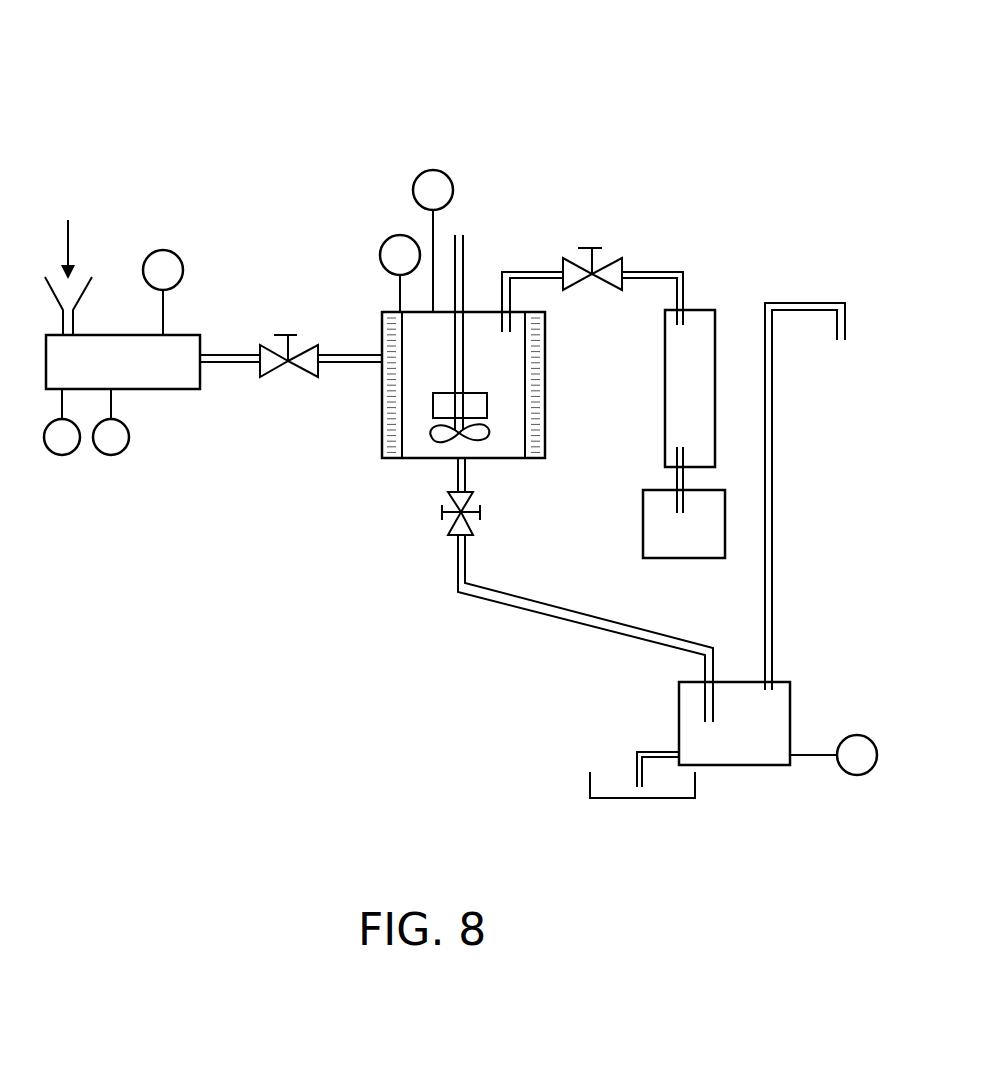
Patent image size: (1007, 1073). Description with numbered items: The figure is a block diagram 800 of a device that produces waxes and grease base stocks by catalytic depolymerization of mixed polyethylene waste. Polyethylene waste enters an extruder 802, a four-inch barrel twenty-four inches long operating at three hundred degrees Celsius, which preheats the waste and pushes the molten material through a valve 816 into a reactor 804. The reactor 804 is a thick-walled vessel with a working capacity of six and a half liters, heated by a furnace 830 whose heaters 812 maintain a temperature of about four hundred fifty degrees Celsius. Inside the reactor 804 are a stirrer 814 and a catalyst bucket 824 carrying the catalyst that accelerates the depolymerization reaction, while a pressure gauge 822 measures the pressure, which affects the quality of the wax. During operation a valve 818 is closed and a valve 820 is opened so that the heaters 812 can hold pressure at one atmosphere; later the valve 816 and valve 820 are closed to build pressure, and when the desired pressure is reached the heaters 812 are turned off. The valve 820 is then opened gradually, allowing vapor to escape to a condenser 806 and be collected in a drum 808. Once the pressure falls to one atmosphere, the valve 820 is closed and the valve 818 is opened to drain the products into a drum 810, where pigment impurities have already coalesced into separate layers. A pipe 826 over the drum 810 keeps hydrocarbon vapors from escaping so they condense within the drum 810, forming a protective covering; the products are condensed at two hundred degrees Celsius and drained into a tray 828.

The block diagram 800 is at (258, 70).
The extruder 802 is at (110, 380).
The reactor 804 is at (410, 403).
The condenser 806 is at (707, 351).
The drum 808 is at (722, 548).
The drum 810 is at (775, 753).
The heaters 812 is at (527, 442).
The stirrer 814 is at (464, 372).
The valve 816 is at (312, 344).
The valve 818 is at (455, 538).
The valve 820 is at (622, 257).
The pressure gauge 822 is at (453, 173).
The catalyst bucket 824 is at (433, 414).
The pipe 826 is at (773, 473).
The tray 828 is at (602, 800).
The furnace 830 is at (540, 378).